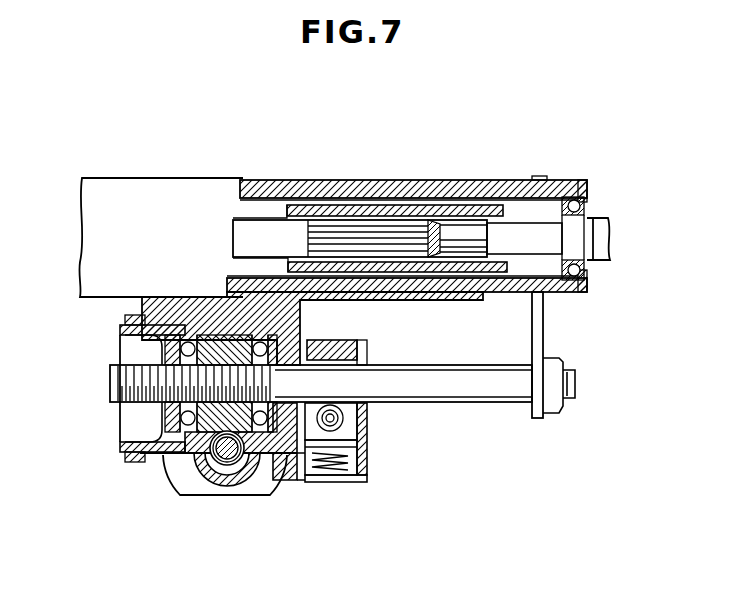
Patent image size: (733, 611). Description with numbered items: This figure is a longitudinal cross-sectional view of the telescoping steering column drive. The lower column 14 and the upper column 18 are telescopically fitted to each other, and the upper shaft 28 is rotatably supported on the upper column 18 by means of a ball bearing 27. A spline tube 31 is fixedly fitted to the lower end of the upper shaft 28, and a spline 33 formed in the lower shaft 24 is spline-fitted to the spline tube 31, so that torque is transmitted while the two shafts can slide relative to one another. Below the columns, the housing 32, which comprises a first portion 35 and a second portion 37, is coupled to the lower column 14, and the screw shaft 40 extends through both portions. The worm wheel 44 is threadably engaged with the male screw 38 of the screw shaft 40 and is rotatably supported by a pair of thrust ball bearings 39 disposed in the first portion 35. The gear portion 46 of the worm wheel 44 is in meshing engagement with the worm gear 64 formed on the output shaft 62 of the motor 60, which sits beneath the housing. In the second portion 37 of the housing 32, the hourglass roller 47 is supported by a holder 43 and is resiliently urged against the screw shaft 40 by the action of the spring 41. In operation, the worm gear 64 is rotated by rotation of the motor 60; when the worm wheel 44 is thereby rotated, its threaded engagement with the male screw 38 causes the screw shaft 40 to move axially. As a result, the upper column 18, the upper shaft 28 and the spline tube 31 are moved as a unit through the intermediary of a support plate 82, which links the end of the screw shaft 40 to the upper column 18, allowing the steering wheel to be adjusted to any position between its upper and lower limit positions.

The lower column 14 is at (185, 191).
The upper column 18 is at (517, 195).
The lower shaft 24 is at (262, 230).
The ball bearing 27 is at (586, 208).
The upper shaft 28 is at (600, 240).
The spline tube 31 is at (493, 200).
The housing 32 is at (291, 496).
The spline 33 is at (345, 215).
The first portion 35 is at (150, 463).
The second portion 37 is at (332, 484).
The male screw 38 is at (128, 364).
The thrust ball bearings 39 is at (124, 420).
The screw shaft 40 is at (452, 367).
The spring 41 is at (355, 478).
The holder 43 is at (355, 452).
The worm wheel 44 is at (185, 316).
The gear portion 46 is at (213, 335).
The hourglass roller 47 is at (367, 420).
The motor 60 is at (182, 488).
The output shaft 62 is at (215, 487).
The worm gear 64 is at (247, 490).
The support plate 82 is at (538, 333).